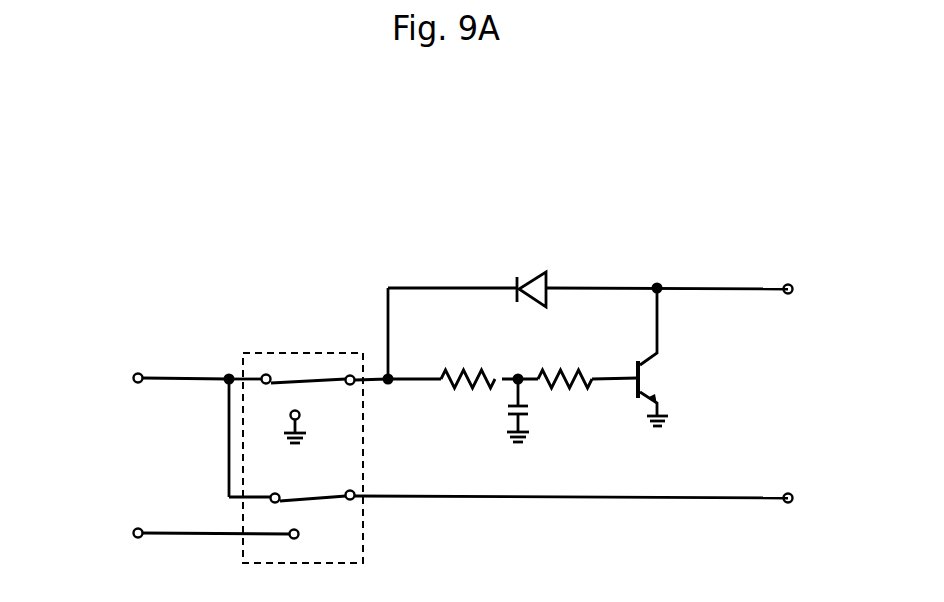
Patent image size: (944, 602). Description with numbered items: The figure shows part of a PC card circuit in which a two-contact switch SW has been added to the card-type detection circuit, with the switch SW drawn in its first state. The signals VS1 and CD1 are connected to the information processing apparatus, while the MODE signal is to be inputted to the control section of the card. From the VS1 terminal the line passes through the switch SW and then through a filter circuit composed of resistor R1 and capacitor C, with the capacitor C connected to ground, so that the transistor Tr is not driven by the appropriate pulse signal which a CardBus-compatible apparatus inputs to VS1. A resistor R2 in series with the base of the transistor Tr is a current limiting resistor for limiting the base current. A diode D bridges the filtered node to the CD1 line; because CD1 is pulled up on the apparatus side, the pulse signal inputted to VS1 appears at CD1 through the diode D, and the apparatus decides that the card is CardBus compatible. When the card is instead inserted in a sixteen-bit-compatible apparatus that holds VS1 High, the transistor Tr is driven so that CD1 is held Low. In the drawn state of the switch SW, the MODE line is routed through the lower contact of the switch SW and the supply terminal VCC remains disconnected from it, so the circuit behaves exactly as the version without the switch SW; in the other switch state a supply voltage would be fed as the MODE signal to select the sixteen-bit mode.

The two-contact switch SW is at (303, 433).
The diode D is at (534, 270).
The resistor R1 is at (468, 361).
The resistor R2 is at (565, 361).
The capacitor C is at (537, 410).
The transistor Tr is at (671, 357).
The VS1 signal VS1 is at (89, 376).
The VCC terminal VCC is at (89, 533).
The CD1 signal CD1 is at (828, 290).
The MODE signal MODE is at (849, 500).